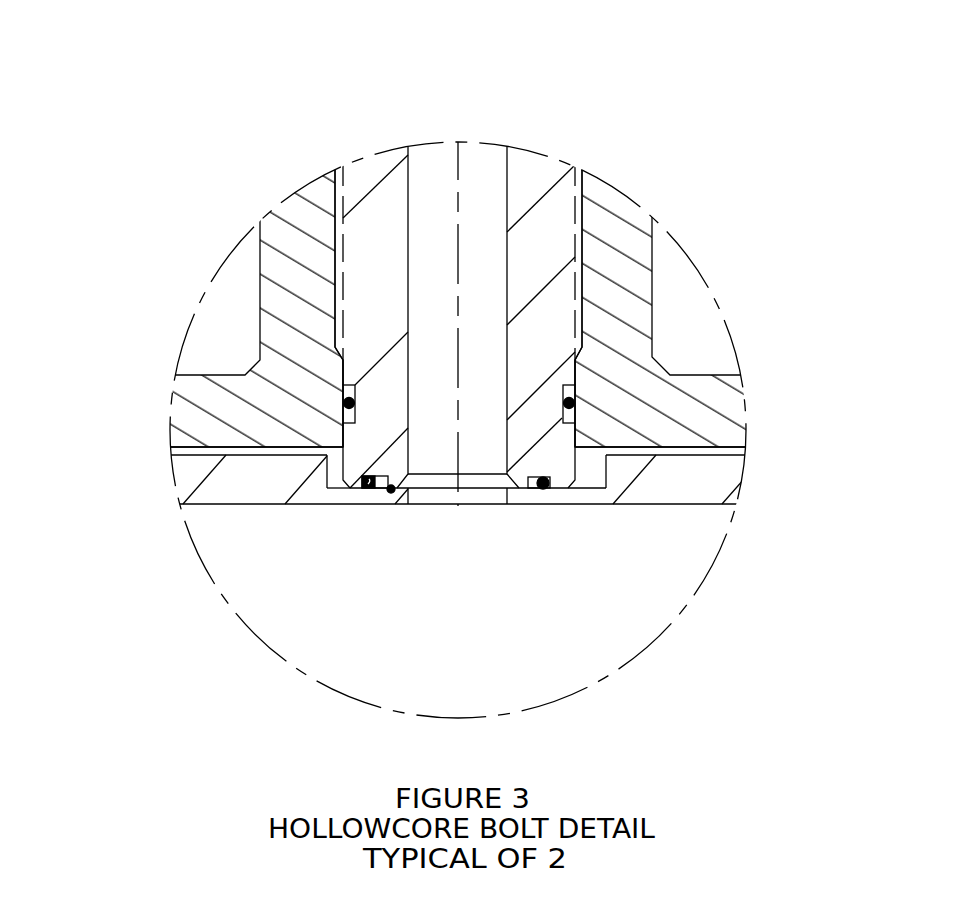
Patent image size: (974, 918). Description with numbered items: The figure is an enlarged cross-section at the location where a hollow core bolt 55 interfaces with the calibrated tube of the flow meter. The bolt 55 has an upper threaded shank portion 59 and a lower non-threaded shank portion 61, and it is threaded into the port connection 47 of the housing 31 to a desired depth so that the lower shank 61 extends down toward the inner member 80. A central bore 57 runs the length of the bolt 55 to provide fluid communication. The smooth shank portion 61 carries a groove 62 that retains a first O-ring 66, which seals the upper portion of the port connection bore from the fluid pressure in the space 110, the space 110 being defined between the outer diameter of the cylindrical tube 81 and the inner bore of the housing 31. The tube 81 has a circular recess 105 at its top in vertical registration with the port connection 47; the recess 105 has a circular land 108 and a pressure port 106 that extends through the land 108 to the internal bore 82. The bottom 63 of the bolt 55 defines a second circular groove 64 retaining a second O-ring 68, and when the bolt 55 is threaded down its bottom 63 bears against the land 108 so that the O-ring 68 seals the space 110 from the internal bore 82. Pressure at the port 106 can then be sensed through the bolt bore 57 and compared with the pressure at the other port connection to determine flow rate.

The housing 31 is at (537, 399).
The port connection 47 is at (539, 283).
The hollow core bolt 55 is at (569, 259).
The central bore 57 is at (348, 288).
The upper threaded shank portion 59 is at (633, 237).
The lower non-threaded shank portion 61 is at (630, 240).
The groove 62 is at (459, 401).
The bottom 63 is at (459, 542).
The second circular groove 64 is at (605, 524).
The first O-ring 66 is at (390, 403).
The second O-ring 68 is at (702, 524).
The inner member 80 is at (264, 494).
The cylindrical tube 81 is at (416, 520).
The internal bore 82 is at (474, 526).
The circular recess 105 is at (325, 543).
The pressure port 106 is at (401, 536).
The circular land 108 is at (329, 576).
The space 110 is at (497, 481).